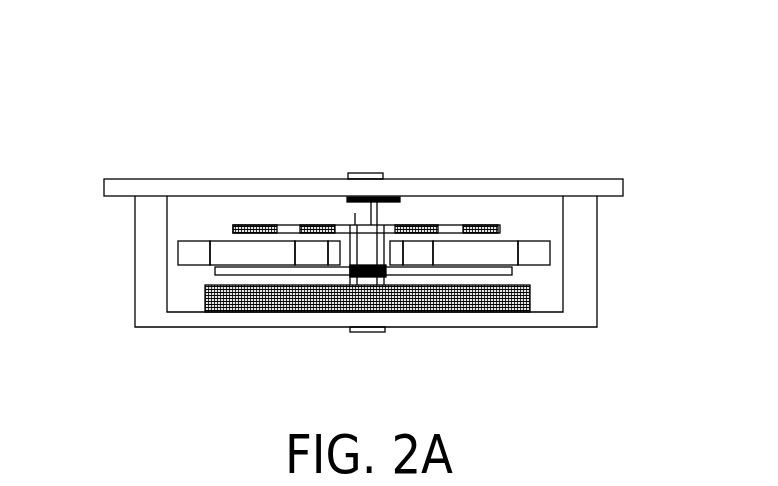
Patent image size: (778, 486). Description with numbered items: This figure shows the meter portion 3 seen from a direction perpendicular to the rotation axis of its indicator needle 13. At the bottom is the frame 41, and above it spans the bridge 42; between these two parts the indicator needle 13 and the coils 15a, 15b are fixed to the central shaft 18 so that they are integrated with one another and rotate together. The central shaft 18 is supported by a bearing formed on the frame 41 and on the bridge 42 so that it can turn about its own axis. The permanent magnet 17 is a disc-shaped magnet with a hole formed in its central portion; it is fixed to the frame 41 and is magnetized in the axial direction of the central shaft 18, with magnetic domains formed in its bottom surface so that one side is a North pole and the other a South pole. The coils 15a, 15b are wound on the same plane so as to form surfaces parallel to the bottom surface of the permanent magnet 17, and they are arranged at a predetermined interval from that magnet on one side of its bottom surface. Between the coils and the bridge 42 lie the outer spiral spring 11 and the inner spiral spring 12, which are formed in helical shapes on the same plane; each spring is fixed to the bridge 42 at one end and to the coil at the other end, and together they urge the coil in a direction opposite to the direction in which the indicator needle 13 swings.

The meter portion 3 is at (587, 83).
The outer spiral spring 11 is at (478, 226).
The inner spiral spring 12 is at (398, 224).
The indicator needle 13 is at (215, 268).
The coil 15a is at (550, 247).
The coil 15b is at (180, 252).
The permanent magnet 17 is at (510, 312).
The central shaft 18 is at (355, 214).
The frame 41 is at (185, 327).
The bridge 42 is at (172, 178).